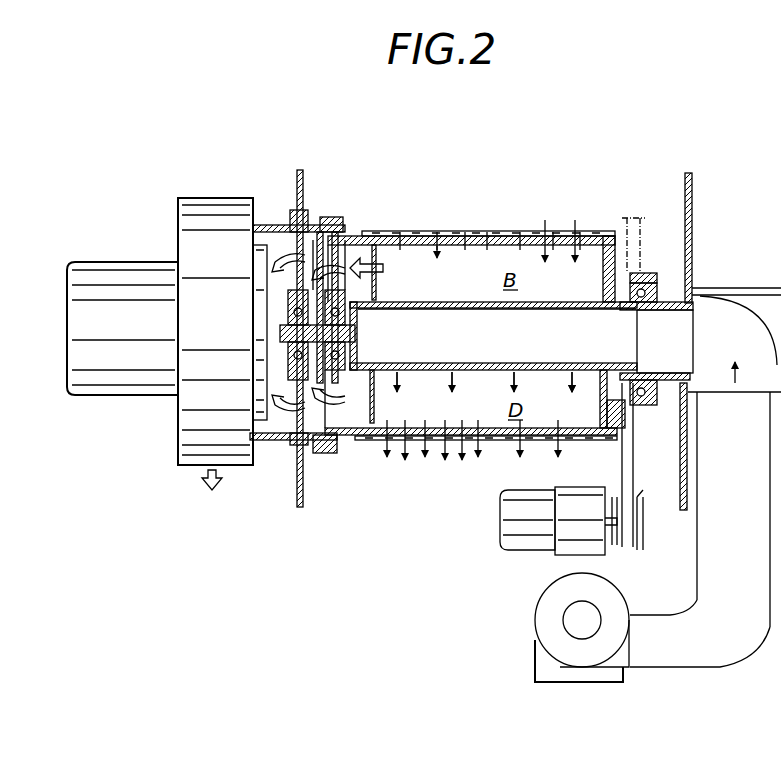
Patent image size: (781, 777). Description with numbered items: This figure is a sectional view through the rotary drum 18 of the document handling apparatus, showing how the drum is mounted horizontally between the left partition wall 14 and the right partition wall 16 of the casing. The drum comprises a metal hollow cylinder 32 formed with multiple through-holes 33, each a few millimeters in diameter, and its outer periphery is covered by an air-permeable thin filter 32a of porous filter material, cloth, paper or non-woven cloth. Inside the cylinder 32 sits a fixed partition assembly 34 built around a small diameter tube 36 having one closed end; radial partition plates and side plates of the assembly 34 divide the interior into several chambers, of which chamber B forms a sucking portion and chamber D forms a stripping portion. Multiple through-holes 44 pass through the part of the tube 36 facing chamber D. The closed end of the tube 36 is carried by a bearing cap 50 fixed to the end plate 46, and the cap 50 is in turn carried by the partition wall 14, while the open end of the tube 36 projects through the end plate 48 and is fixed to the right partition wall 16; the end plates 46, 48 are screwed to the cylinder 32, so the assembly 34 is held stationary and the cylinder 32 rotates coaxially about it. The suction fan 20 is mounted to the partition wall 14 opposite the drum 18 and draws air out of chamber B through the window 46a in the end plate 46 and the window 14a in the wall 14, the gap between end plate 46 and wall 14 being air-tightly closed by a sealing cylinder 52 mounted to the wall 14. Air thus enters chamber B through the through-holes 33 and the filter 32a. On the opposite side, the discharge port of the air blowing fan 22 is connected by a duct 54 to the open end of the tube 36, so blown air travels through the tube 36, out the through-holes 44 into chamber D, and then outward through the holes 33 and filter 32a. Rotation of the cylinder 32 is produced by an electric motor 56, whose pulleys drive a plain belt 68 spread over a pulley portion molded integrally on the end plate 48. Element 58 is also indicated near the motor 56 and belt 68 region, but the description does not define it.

The left partition wall 14 is at (297, 200).
The window 14a is at (292, 418).
The right partition wall 16 is at (692, 207).
The rotary drum 18 is at (527, 215).
The suction fan 20 is at (188, 468).
The air blowing fan 22 is at (605, 683).
The metal hollow cylinder 32 is at (483, 246).
The air-permeable thin filter 32a is at (462, 258).
The through-holes 33 is at (575, 245).
The partition assembly 34 is at (416, 300).
The small diameter tube 36 is at (530, 302).
The through-holes 44 is at (404, 360).
The end plate 46 is at (350, 242).
The window 46a is at (346, 418).
The end plate 48 is at (650, 274).
The bearing cap 50 is at (314, 290).
The sealing cylinder 52 is at (325, 455).
The duct 54 is at (720, 670).
The electric motor 56 is at (503, 550).
The bracket 58 is at (640, 548).
The plain belt 68 is at (634, 455).